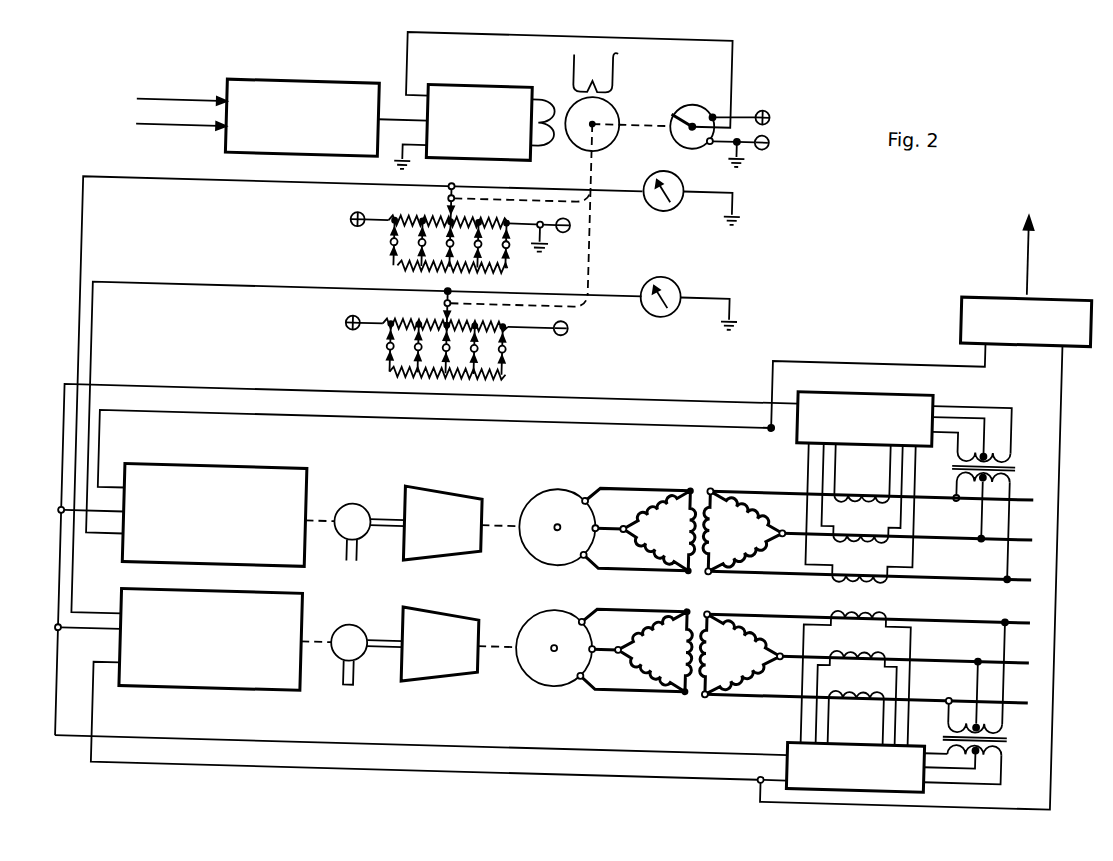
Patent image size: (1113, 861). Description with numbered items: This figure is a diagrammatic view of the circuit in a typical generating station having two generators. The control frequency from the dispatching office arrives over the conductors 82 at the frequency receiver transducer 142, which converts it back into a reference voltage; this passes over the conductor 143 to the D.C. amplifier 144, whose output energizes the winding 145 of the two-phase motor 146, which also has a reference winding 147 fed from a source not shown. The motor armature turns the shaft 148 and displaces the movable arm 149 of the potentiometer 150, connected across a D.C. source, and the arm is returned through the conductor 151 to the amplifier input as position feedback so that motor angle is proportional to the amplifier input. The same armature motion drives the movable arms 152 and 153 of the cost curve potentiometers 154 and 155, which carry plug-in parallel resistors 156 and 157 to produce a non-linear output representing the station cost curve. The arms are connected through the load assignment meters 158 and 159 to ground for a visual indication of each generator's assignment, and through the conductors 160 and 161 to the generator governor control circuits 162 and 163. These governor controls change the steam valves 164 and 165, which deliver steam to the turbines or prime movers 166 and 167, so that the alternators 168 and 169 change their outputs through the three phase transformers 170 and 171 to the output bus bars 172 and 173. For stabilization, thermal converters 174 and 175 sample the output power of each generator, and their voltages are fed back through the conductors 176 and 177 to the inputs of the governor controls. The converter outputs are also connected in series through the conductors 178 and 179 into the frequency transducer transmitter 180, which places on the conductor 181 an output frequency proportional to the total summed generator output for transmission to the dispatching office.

The conductors 82 is at (177, 111).
The frequency receiver transducer 142 is at (277, 135).
The conductor 143 is at (381, 125).
The D.C. amplifier 144 is at (454, 135).
The winding 145 is at (546, 100).
The two-phase motor 146 is at (606, 112).
The reference winding 147 is at (605, 68).
The shaft 148 is at (629, 125).
The movable arm 149 is at (665, 113).
The potentiometer 150 is at (662, 140).
The conductor 151 is at (519, 36).
The movable arm 152 is at (448, 208).
The movable arm 153 is at (440, 320).
The cost curve potentiometer 154 is at (506, 228).
The cost curve potentiometer 155 is at (506, 332).
The plug-in parallel resistors 156 is at (503, 270).
The plug-in parallel resistors 157 is at (467, 379).
The load assignment meter 158 is at (678, 187).
The load assignment meter 159 is at (678, 289).
The conductor 160 is at (210, 189).
The conductor 161 is at (206, 294).
The generator governor control circuit 162 is at (199, 660).
The generator governor control circuit 163 is at (200, 539).
The steam valve 164 is at (352, 630).
The steam valve 165 is at (352, 509).
The turbine or prime mover 166 is at (429, 658).
The turbine or prime mover 167 is at (429, 537).
The alternator 168 is at (542, 636).
The alternator 169 is at (542, 515).
The three phase transformer 170 is at (707, 611).
The three phase transformer 171 is at (707, 488).
The output bus bars 172 is at (941, 690).
The output bus bars 173 is at (931, 567).
The thermal converter 174 is at (895, 702).
The thermal converter 175 is at (848, 421).
The conductor 176 is at (491, 749).
The conductor 177 is at (264, 422).
The conductor 178 is at (235, 397).
The conductor 179 is at (283, 774).
The frequency transducer transmitter 180 is at (1006, 319).
The conductor 181 is at (1024, 243).